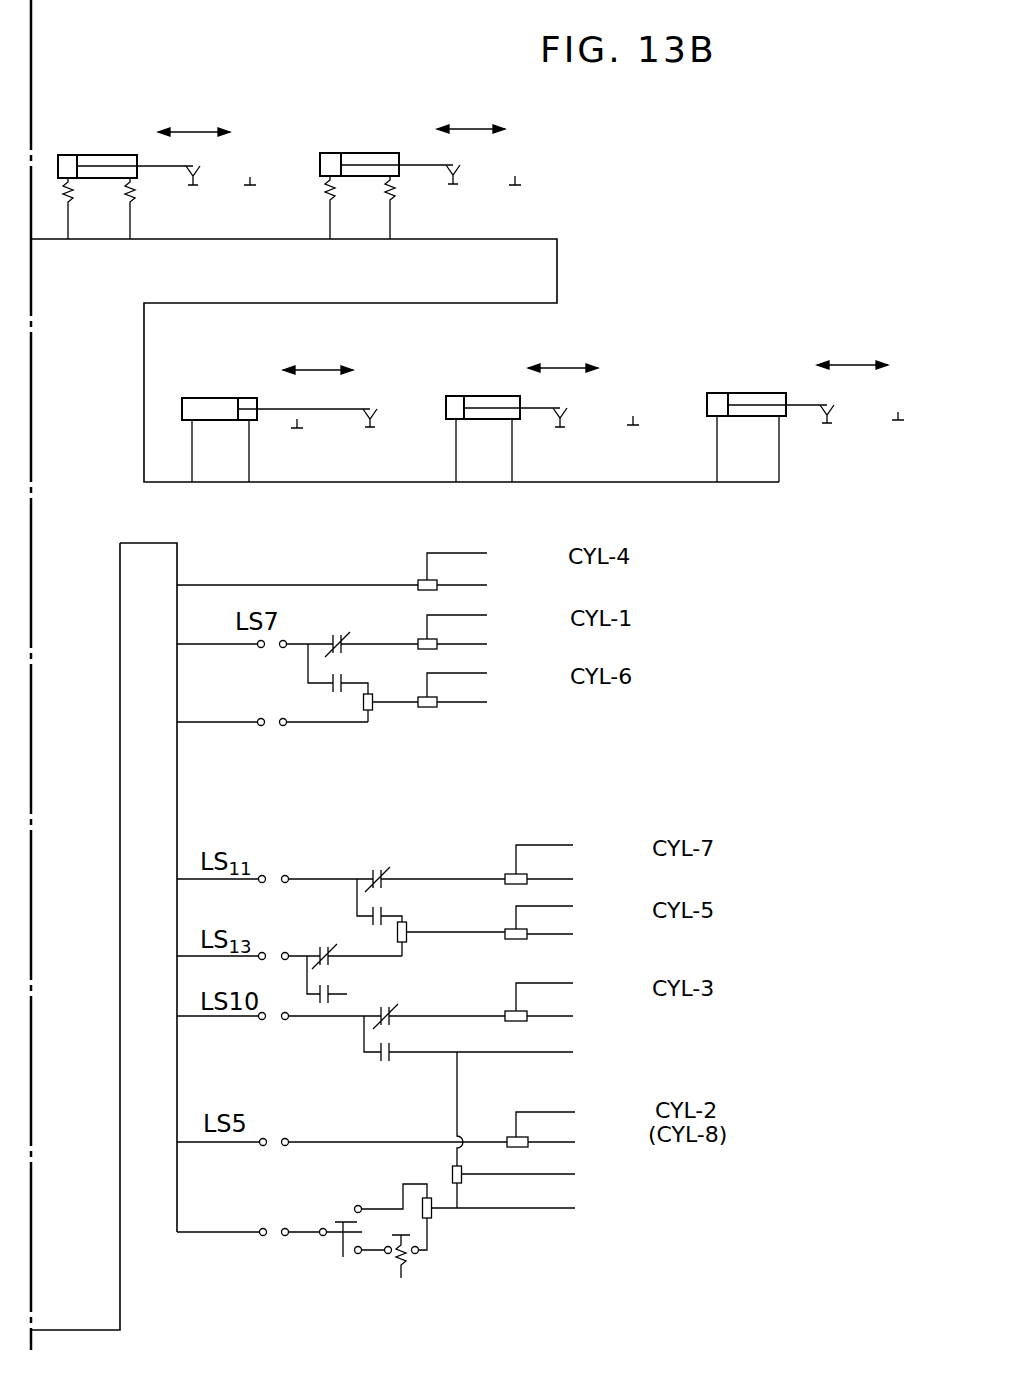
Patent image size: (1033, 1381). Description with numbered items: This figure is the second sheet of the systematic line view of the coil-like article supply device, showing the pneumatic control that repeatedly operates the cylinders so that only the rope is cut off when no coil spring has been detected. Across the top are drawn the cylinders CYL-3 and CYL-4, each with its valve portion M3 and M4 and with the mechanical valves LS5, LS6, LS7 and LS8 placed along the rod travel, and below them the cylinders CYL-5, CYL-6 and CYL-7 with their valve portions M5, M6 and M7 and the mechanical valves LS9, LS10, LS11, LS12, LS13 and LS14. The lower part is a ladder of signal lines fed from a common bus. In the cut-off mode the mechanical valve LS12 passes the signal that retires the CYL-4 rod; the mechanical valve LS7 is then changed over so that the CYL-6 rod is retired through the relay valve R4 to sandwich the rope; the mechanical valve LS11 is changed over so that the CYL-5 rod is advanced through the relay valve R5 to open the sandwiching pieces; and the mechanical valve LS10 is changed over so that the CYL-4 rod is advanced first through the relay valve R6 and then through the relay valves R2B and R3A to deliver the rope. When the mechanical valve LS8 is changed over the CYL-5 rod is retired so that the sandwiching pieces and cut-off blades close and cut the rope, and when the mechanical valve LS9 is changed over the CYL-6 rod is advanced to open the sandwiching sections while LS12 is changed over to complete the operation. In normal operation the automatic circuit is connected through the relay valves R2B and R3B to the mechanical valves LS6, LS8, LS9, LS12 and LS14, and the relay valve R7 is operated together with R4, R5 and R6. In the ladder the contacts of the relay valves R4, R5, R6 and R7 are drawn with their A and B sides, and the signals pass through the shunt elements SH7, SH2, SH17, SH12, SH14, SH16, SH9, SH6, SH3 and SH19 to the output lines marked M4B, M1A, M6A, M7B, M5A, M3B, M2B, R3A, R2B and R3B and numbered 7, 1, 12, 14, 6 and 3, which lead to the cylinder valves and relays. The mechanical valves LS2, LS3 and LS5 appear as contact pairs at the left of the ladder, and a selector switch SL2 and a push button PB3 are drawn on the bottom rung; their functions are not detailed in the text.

The cylinder 3 CYL-3 is at (144, 153).
The cylinder CYL-4 is at (412, 150).
The cylinder CYL-5 is at (276, 393).
The cylinder CYL-6 is at (522, 391).
The cylinder 7 CYL-7 is at (797, 388).
The valve solenoid M3 is at (98, 208).
The valve solenoid M4 is at (359, 207).
The valve solenoid M5 is at (221, 451).
The valve solenoid M6 is at (484, 450).
The valve solenoid M7 is at (748, 449).
The limit switch 2 LS2 is at (272, 706).
The limit switch 3 LS3 is at (248, 1217).
The limit switch 5 LS5 is at (195, 193).
The mechanical valve LS6 is at (255, 198).
The mechanical valve LS7 is at (454, 192).
The mechanical valve LS8 is at (517, 198).
The mechanical valve LS9 is at (310, 440).
The mechanical valve LS10 is at (387, 435).
The mechanical valve LS11 is at (574, 432).
The mechanical valve LS12 is at (631, 436).
The limit switch 13 LS13 is at (844, 428).
The mechanical valve LS14 is at (911, 431).
The shunt 2 SH2 is at (452, 632).
The shunt 3 SH3 is at (520, 1126).
The shunt 6 SH6 is at (512, 1002).
The shunt 7 SH7 is at (332, 571).
The shunt 9 SH9 is at (512, 922).
The shunt 12 SH12 is at (458, 690).
The shunt 14 SH14 is at (512, 864).
The shunt 16 SH16 is at (452, 945).
The shunt 17 SH17 is at (398, 696).
The shunt 19 SH19 is at (514, 1130).
The relay valve R4 is at (352, 663).
The relay valve R5 is at (397, 897).
The relay valve R6 is at (431, 1035).
The relay valve R7 is at (344, 968).
The selector switch 2 SL2 is at (326, 1246).
The push button 3 PB3 is at (417, 1231).
The solenoid M4 B terminal M4B is at (512, 556).
The solenoid M1 A terminal M1A is at (512, 618).
The solenoid M6 A terminal M6A is at (512, 676).
The solenoid M7 B terminal M7B is at (599, 848).
The solenoid M5 A terminal M5A is at (599, 910).
The solenoid M3 B terminal M3B is at (599, 988).
The solenoid M2 B terminal M2B is at (602, 1112).
The relay valve R3A is at (597, 1054).
The relay valve R2B is at (600, 1176).
The relay valve R3B is at (527, 1210).
The delivery mechanism 7 is at (497, 590).
The wire 1 is at (497, 650).
The wire 12 is at (504, 708).
The wire 14 is at (592, 881).
The rotary drum 6 is at (585, 1018).
The wire 3 is at (587, 1144).